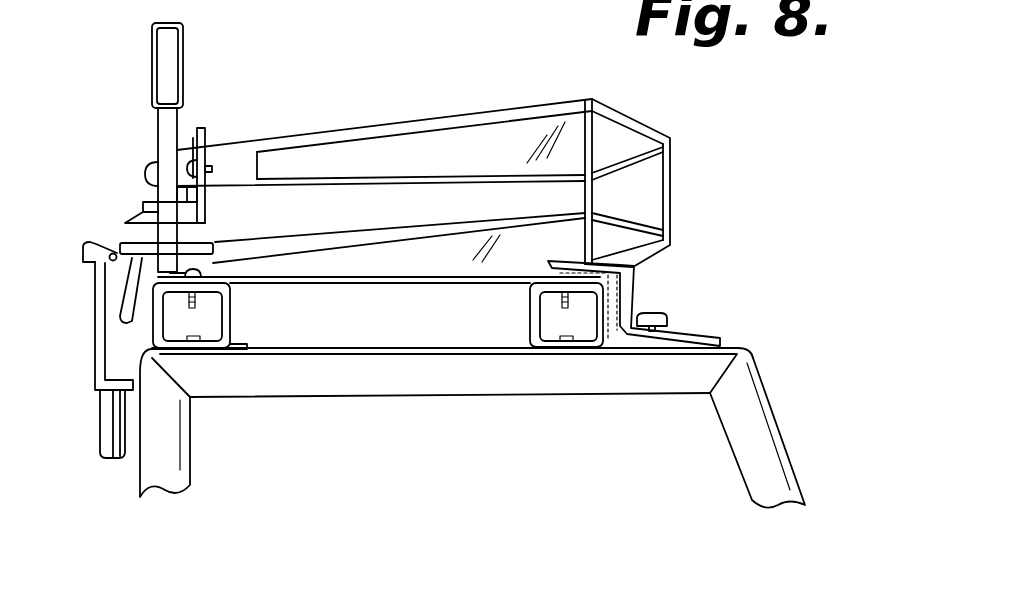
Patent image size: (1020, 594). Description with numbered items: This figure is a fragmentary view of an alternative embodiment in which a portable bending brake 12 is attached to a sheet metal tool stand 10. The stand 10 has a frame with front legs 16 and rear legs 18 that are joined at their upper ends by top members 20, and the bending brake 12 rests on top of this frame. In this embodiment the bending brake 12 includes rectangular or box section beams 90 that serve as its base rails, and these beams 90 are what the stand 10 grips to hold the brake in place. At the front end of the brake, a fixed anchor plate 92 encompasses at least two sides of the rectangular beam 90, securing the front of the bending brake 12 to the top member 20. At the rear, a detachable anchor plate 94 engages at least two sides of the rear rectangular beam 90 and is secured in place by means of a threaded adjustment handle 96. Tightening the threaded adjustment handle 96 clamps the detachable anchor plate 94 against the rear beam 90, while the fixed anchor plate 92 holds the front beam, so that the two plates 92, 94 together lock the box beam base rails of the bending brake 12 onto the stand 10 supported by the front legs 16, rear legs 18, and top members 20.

The sheet metal tool stand 10 is at (474, 392).
The portable bending brake 12 is at (399, 147).
The front legs 16 is at (168, 406).
The rear legs 18 is at (757, 445).
The top members 20 is at (358, 386).
The rectangular or box section beams 90 is at (231, 331).
The fixed anchor plate 92 is at (151, 328).
The detachable anchor plate 94 is at (633, 312).
The threaded adjustment handle 96 is at (668, 314).